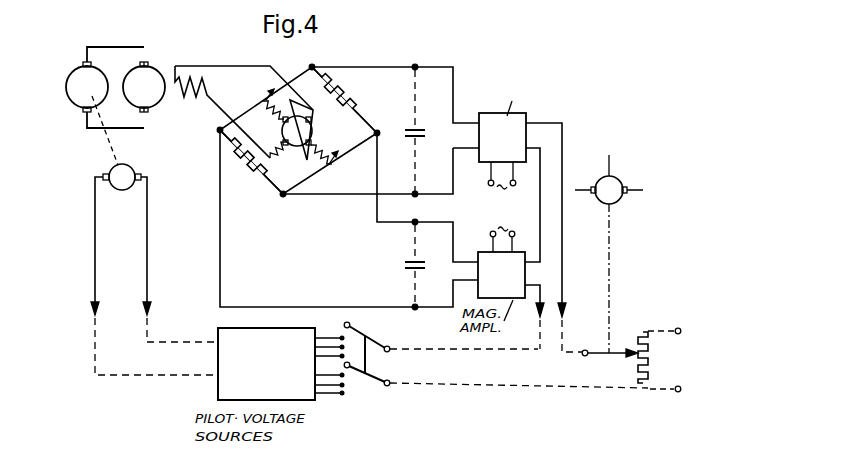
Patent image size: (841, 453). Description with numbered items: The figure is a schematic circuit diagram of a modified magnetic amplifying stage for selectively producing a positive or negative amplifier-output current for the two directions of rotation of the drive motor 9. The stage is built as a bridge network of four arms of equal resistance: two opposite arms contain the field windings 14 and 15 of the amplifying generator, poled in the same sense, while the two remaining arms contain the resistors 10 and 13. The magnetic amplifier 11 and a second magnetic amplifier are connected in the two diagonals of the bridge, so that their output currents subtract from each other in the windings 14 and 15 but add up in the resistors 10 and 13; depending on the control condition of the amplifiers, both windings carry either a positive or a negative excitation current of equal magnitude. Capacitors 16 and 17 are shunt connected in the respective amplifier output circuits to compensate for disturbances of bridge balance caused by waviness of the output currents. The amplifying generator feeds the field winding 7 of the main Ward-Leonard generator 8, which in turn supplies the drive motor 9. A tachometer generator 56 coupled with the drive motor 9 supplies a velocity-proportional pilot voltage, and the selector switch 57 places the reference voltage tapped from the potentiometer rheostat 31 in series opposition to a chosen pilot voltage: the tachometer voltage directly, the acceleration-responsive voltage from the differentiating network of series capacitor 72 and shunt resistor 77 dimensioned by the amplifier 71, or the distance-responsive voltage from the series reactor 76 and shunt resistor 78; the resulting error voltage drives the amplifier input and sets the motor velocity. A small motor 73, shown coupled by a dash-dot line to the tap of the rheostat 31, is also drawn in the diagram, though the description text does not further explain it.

The drive motor 9 is at (68, 105).
The main Ward-Leonard generator 8 is at (155, 108).
The field winding 7 is at (187, 99).
The field winding 14 is at (260, 91).
The resistor 10 is at (347, 100).
The resistor 13 is at (261, 178).
The field winding 15 is at (334, 173).
The capacitor 16 is at (408, 132).
The capacitor 17 is at (401, 267).
The magnetic amplifier 11 is at (508, 149).
The tachometer generator 56 is at (134, 190).
The motor 73 is at (613, 177).
The selector switch 57 is at (378, 344).
The potentiometer rheostat 31 is at (638, 369).
The amplifier 71 is at (244, 356).
The series capacitor 72 is at (273, 356).
The shunt resistor 77 is at (302, 356).
The series reactor 76 is at (254, 389).
The shunt resistor 78 is at (286, 389).